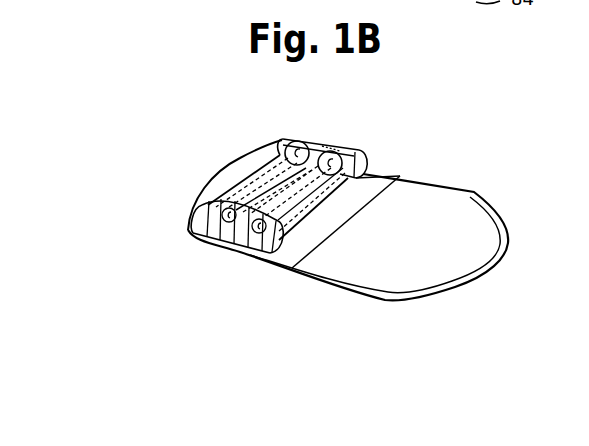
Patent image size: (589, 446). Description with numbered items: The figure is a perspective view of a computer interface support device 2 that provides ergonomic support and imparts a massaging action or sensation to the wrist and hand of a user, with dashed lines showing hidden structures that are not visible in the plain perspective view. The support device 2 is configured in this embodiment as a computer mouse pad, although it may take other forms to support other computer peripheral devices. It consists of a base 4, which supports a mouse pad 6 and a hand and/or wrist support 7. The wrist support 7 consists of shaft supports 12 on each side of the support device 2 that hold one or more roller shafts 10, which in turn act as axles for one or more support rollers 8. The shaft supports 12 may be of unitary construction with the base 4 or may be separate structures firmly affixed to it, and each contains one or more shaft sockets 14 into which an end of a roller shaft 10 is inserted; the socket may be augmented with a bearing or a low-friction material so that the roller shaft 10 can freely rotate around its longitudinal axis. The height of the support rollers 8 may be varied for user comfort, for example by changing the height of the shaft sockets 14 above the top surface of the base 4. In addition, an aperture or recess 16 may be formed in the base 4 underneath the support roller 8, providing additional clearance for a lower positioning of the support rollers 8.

The computer interface support device 2 is at (473, 181).
The base 4 is at (509, 238).
The mouse pad 6 is at (422, 205).
The wrist support 7 is at (350, 134).
The support roller 8 is at (263, 171).
The roller shaft 10 is at (313, 212).
The shaft support 12 is at (291, 138).
The shaft socket 14 is at (330, 145).
The aperture or recess 16 is at (388, 177).